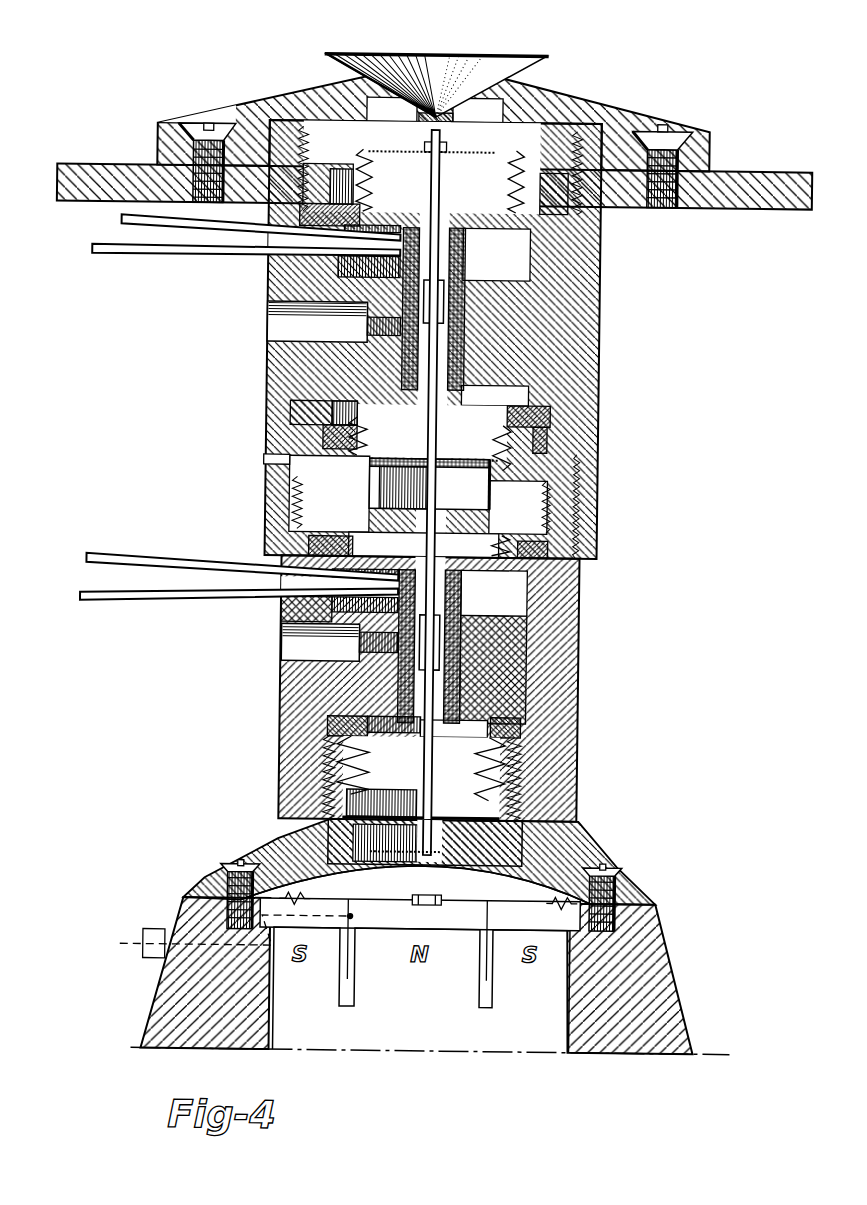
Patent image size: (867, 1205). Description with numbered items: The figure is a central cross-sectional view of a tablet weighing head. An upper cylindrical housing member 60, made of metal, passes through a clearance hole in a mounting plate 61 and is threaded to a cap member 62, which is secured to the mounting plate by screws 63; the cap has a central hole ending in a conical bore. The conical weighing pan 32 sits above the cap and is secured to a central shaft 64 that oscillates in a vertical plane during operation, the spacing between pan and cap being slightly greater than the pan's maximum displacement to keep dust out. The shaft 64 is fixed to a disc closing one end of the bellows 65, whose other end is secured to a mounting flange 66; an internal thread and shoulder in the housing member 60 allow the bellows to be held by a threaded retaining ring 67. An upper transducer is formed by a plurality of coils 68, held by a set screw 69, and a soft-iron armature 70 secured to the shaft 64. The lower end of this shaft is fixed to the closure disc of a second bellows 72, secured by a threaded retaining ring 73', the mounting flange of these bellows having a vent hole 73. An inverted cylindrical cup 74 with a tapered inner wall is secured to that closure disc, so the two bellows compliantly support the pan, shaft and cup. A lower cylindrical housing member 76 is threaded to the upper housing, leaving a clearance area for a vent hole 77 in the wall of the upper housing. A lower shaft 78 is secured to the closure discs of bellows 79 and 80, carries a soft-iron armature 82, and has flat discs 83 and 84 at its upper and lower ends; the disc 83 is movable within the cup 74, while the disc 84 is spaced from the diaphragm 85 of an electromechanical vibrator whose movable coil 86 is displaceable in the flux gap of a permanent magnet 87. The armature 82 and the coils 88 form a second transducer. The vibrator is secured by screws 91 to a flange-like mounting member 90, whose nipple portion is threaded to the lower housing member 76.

The conical weighing pan 32 is at (368, 53).
The upper cylindrical housing member 60 is at (594, 303).
The mounting plate 61 is at (735, 208).
The cap member 62 is at (592, 106).
The screws 63 is at (199, 138).
The central shaft 64 is at (422, 180).
The bellows 65 is at (495, 180).
The mounting flange 66 is at (568, 228).
The threaded retaining ring 67 is at (320, 173).
The coils 68 is at (460, 330).
The set screw 69 is at (385, 336).
The soft-iron armature 70 is at (441, 282).
The second bellows 72 is at (505, 443).
The vent hole 73 is at (323, 412).
The threaded retaining ring 73' is at (575, 426).
The inverted cylindrical cup 74 is at (491, 470).
The lower cylindrical housing member 76 is at (582, 596).
The vent hole 77 is at (288, 462).
The lower shaft 78 is at (432, 763).
The bellows 79 is at (506, 547).
The bellows 80 is at (482, 782).
The soft-iron armature 82 is at (437, 638).
The flat disc 83 is at (458, 510).
The flat disc 84 is at (495, 851).
The diaphragm 85 is at (455, 898).
The movable coil 86 is at (499, 916).
The permanent magnet 87 is at (667, 914).
The coils 88 is at (460, 585).
The flange-like mounting member 90 is at (280, 840).
The screws 91 is at (235, 868).